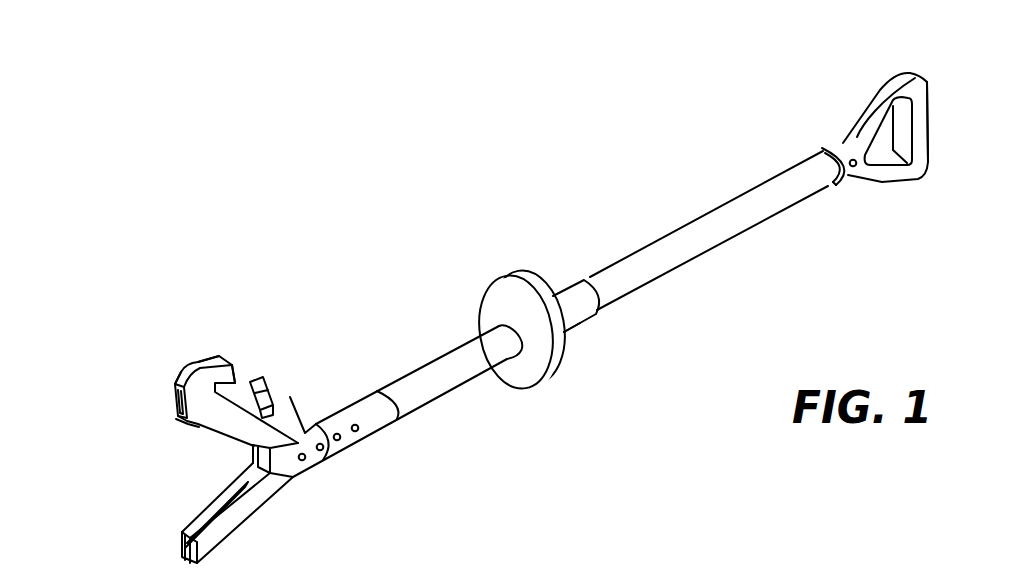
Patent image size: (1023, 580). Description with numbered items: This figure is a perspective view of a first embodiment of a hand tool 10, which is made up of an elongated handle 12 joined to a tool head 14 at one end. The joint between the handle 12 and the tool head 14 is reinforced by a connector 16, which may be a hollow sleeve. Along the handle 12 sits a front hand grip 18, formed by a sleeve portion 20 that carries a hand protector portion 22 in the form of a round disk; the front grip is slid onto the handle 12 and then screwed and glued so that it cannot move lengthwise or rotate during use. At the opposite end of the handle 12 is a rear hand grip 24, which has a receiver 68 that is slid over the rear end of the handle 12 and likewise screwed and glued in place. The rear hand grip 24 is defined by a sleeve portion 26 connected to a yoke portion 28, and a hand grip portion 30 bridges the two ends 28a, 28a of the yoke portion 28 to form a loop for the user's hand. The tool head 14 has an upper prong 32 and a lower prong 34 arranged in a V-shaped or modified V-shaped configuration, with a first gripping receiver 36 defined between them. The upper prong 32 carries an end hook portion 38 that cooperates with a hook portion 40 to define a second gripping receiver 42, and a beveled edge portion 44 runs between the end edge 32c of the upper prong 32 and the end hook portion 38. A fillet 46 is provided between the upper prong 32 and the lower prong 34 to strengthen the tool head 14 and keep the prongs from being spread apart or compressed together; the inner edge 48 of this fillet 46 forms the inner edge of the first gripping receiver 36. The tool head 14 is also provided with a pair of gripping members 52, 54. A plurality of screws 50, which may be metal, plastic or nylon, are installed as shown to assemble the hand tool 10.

The hand tool 10 is at (270, 233).
The handle 12 is at (696, 274).
The tool head 14 is at (284, 498).
The connector 16 is at (393, 437).
The front hand grip 18 is at (575, 338).
The sleeve portion 20 is at (563, 295).
The hand protector portion 22 is at (499, 289).
The rear hand grip 24 is at (901, 194).
The sleeve portion 26 is at (835, 142).
The yoke portion 28 is at (866, 187).
The ends of the yoke portion 28a is at (892, 85).
The hand grip portion 30 is at (926, 107).
The upper prong 32 is at (192, 422).
The end edge 32c is at (173, 394).
The lower prong 34 is at (224, 534).
The first gripping receiver 36 is at (206, 473).
The end hook portion 38 is at (210, 363).
The hook portion 40 is at (283, 397).
The second gripping receiver 42 is at (243, 393).
The beveled edge portion 44 is at (178, 381).
The fillet 46 is at (283, 457).
The inner edge 48 is at (208, 494).
The screws 50 is at (356, 424).
The gripping member 52 is at (165, 402).
The gripping member 54 is at (170, 544).
The receiver 68 is at (828, 188).